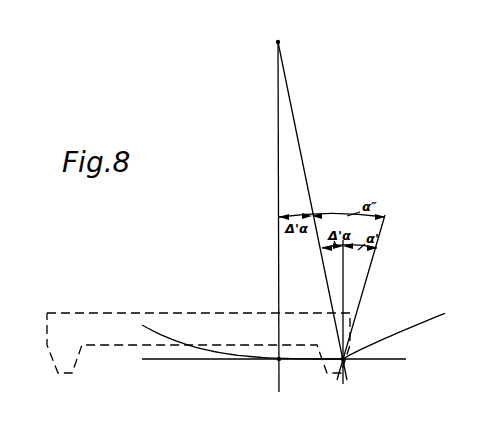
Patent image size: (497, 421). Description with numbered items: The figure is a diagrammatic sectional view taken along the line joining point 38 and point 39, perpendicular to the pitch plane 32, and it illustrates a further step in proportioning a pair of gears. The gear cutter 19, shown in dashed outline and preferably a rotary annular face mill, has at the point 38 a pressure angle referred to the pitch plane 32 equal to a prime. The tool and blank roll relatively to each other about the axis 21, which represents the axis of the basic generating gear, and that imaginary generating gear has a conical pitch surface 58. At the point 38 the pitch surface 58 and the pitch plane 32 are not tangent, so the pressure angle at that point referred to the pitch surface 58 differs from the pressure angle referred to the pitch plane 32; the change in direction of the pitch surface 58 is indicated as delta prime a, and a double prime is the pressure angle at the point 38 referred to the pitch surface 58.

The axis 21 is at (281, 41).
The cutter 19 is at (63, 323).
The pitch surface 58 is at (378, 339).
The pitch plane 32 is at (403, 360).
The point 38 is at (345, 362).
The point 39 is at (281, 362).